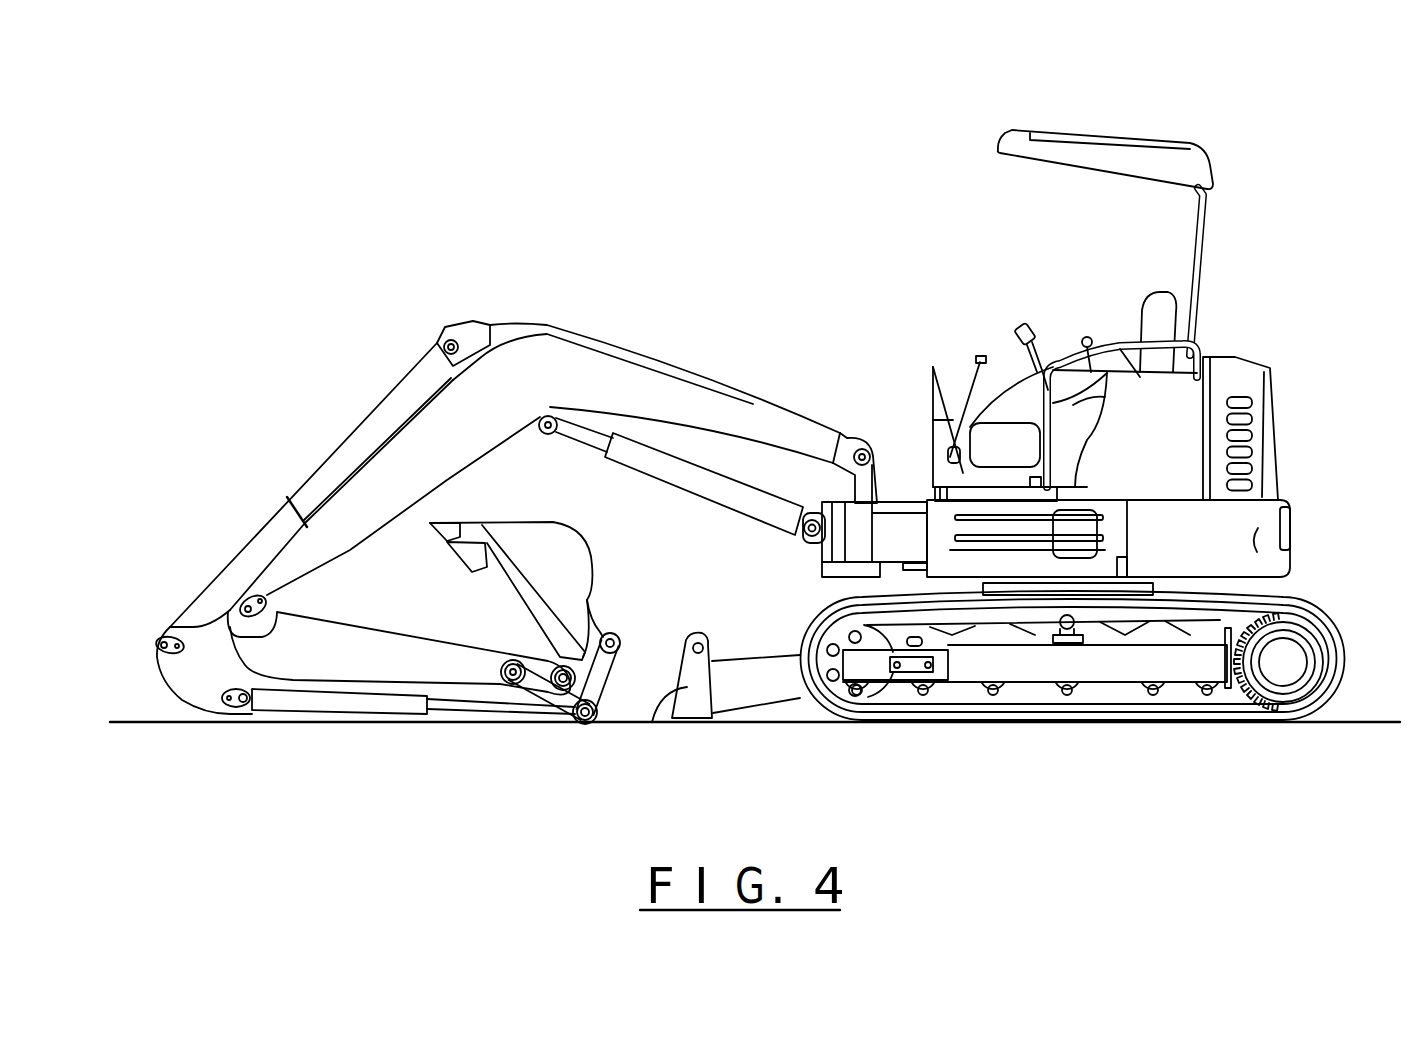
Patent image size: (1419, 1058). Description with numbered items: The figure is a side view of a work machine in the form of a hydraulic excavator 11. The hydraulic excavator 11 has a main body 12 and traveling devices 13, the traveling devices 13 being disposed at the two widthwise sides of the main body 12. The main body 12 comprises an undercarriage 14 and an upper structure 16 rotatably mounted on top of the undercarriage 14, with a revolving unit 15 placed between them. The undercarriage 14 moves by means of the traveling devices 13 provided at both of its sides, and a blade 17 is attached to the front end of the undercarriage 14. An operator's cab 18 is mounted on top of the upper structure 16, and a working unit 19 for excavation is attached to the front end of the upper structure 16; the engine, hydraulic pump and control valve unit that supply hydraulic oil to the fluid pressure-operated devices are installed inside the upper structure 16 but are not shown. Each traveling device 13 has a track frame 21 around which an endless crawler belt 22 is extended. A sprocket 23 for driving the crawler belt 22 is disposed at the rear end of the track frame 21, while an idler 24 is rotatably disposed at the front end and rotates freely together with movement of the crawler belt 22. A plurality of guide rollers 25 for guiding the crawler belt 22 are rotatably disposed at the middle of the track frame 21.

The hydraulic excavator 11 is at (880, 104).
The main body 12 is at (1310, 292).
The traveling device 13 is at (1350, 677).
The undercarriage 14 is at (1360, 646).
The revolving unit 15 is at (1160, 577).
The upper structure 16 is at (1196, 520).
The blade 17 is at (652, 722).
The operator's cab 18 is at (1015, 318).
The working unit 19 is at (592, 356).
The track frame 21 is at (1112, 670).
The crawler belt 22 is at (1310, 712).
The sprocket 23 is at (1237, 687).
The idler 24 is at (883, 690).
The guide roller 25 is at (1050, 690).